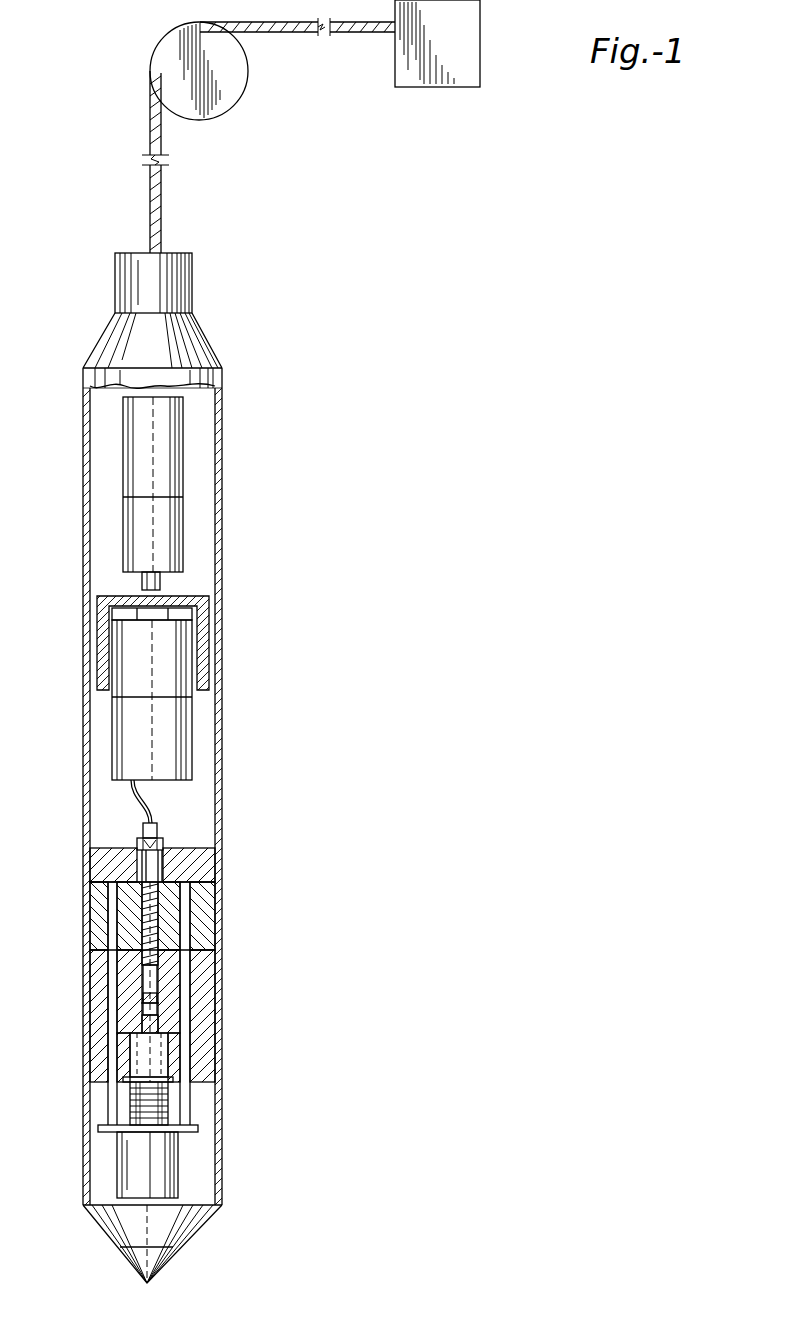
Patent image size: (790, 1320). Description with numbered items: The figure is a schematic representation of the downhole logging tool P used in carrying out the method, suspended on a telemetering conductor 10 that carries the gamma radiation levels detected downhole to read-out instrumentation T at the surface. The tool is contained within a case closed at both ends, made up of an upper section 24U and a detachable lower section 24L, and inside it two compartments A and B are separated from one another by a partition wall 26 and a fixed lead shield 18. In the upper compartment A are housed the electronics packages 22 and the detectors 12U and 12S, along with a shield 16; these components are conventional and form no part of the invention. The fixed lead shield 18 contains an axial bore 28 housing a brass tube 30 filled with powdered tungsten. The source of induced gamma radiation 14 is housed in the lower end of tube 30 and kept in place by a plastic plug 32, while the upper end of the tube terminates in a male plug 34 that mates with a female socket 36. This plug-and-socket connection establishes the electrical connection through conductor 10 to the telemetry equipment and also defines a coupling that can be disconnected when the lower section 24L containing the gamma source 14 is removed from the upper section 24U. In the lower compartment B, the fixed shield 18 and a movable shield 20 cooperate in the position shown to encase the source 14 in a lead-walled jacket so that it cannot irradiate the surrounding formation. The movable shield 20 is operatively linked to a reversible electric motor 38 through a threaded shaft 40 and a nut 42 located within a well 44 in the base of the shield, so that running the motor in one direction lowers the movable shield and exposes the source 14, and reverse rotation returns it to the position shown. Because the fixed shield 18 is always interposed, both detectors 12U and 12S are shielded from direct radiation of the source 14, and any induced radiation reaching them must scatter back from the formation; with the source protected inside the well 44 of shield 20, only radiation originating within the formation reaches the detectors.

The read-out instrumentation T is at (462, 40).
The telemetering means 10 is at (162, 190).
The tool P is at (237, 309).
The upper section of case 24U is at (222, 371).
The upper compartment A is at (212, 461).
The electronics package 22 is at (177, 530).
The upper detector 12U is at (161, 581).
The shield 16 is at (201, 666).
The second detector 12S is at (157, 619).
The male plug 34 is at (141, 838).
The female socket 36 is at (160, 841).
The partition wall 26 is at (210, 864).
The fixed lead shield 18 is at (208, 896).
The axial bore 28 is at (150, 938).
The source of induced gamma radiation 14 is at (153, 975).
The brass tube 30 is at (156, 993).
The plastic plug 32 is at (147, 999).
The lower compartment B is at (150, 1040).
The well 44 is at (166, 1060).
The nut 42 is at (121, 1078).
The movable shield 20 is at (208, 1078).
The threaded shaft 40 is at (152, 1110).
The reversible electric motor 38 is at (176, 1172).
The lower section of case 24L is at (190, 1223).